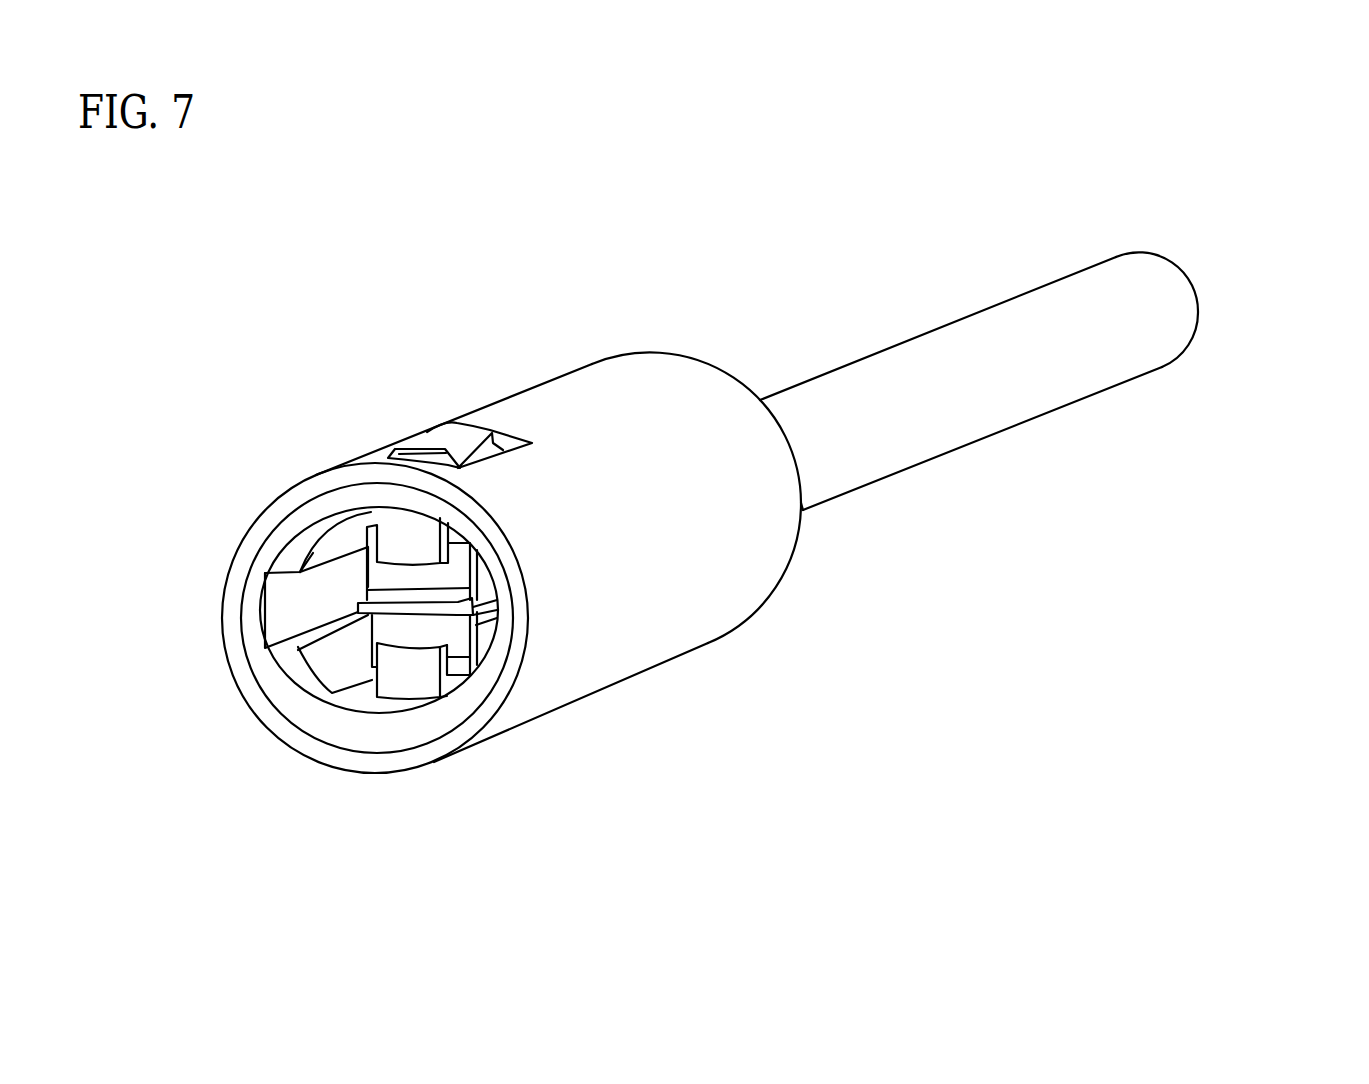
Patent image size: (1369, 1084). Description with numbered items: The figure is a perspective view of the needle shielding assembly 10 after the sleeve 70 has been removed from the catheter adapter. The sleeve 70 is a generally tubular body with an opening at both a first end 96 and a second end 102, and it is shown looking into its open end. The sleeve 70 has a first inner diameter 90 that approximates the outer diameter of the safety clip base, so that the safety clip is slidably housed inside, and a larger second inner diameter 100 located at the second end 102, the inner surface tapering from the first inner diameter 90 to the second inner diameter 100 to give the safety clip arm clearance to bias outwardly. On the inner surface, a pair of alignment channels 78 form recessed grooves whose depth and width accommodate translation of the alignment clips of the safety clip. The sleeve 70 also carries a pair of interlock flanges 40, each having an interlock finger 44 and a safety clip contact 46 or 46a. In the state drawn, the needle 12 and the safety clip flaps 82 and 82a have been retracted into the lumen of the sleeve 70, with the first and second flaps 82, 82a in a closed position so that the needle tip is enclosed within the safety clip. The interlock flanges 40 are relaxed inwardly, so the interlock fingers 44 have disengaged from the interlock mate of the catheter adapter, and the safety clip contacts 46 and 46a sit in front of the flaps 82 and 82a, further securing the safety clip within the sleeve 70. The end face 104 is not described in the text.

The needle shielding assembly 10 is at (1200, 742).
The needle 12 is at (1172, 307).
The sleeve 70 is at (671, 377).
The first end 96 is at (813, 521).
The second inner diameter 100 is at (257, 557).
The second end 102 is at (313, 758).
The end face 104 is at (282, 690).
The first inner diameter 90 is at (330, 528).
The interlock flange 40 is at (460, 443).
The interlock finger 44 is at (425, 452).
The alignment channel 78 is at (283, 617).
The safety clip contact 46 is at (400, 533).
The safety clip flap 82 is at (380, 582).
The safety clip contact 46a is at (392, 680).
The safety clip flap 82a is at (453, 632).